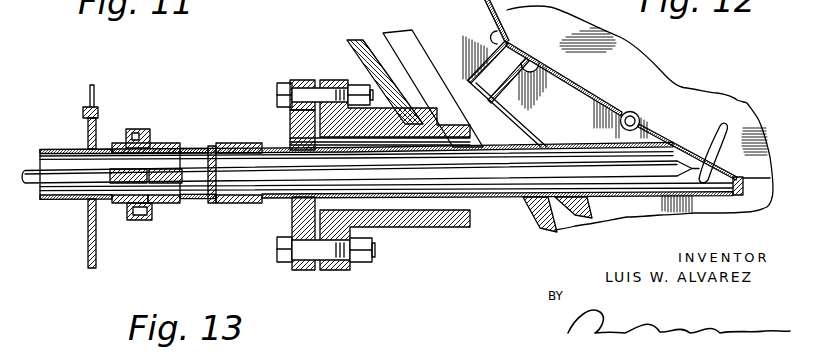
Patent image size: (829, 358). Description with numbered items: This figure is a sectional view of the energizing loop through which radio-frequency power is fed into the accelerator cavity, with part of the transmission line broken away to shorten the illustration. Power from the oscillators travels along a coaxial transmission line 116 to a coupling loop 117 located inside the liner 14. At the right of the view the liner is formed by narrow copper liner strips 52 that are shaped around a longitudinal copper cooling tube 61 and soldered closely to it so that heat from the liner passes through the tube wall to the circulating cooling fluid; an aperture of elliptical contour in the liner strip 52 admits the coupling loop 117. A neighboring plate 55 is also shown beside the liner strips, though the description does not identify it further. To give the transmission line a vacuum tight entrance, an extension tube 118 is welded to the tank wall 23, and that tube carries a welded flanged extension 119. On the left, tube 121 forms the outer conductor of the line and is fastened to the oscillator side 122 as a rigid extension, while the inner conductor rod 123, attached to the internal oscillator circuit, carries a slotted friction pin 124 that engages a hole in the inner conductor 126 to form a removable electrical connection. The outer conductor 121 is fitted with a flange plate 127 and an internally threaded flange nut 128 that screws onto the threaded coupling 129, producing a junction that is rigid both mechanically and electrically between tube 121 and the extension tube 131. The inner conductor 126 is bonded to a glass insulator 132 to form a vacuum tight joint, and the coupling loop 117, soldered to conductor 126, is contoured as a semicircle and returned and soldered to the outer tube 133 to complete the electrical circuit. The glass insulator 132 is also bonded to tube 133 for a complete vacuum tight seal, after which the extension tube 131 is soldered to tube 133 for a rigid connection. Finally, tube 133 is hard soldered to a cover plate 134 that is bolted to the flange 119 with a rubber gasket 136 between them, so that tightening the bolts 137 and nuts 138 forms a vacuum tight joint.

The liner 14 is at (505, 10).
The tank wall 23 is at (365, 40).
The liner strips 52 is at (566, 82).
The plate 55 is at (413, 30).
The cooling tubes 61 is at (620, 123).
The coaxial transmission line 116 is at (216, 207).
The coupling loop 117 is at (713, 128).
The extension tube 118 is at (462, 219).
The flanged extension 119 is at (385, 220).
The outer conductor tube 121 is at (70, 197).
The oscillator side 122 is at (88, 246).
The inner conductor rod 123 is at (58, 173).
The slotted friction pin 124 is at (143, 170).
The inner conductor 126 is at (190, 172).
The flange plate 127 is at (118, 206).
The flange nut 128 is at (138, 221).
The threaded coupling 129 is at (151, 208).
The extension tube 131 is at (241, 207).
The glass insulator 132 is at (222, 150).
The outer tube 133 is at (607, 200).
The cover plate 134 is at (302, 80).
The rubber gasket 136 is at (288, 121).
The bolts 137 is at (288, 98).
The nuts 138 is at (357, 85).